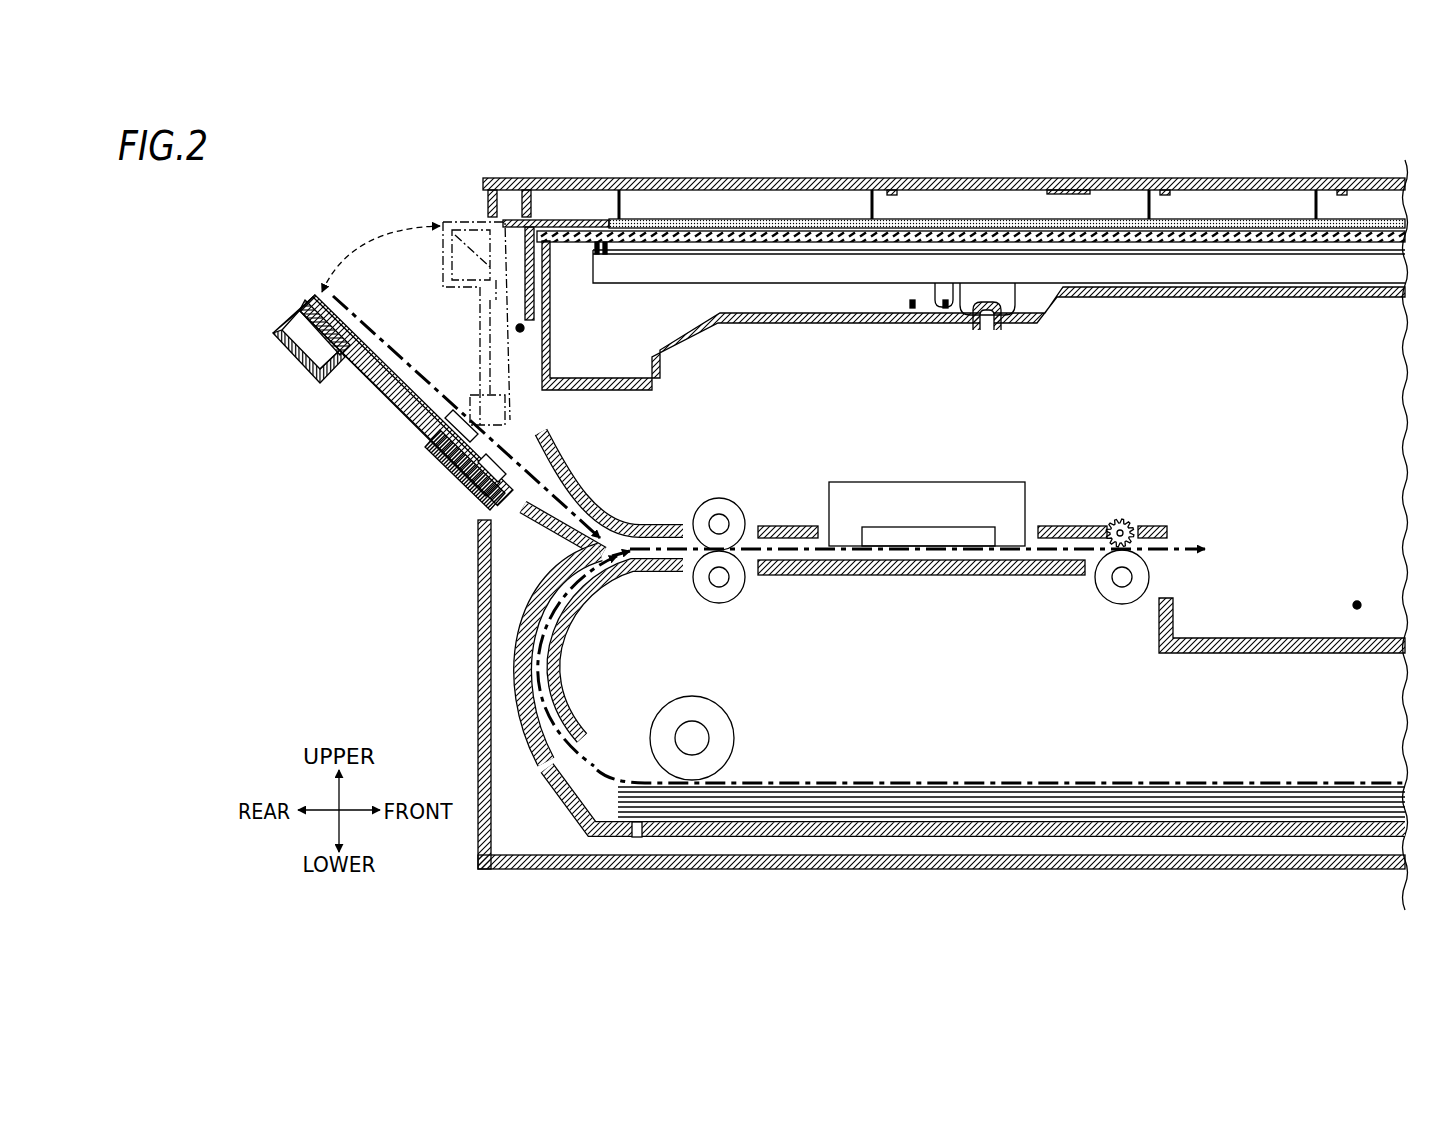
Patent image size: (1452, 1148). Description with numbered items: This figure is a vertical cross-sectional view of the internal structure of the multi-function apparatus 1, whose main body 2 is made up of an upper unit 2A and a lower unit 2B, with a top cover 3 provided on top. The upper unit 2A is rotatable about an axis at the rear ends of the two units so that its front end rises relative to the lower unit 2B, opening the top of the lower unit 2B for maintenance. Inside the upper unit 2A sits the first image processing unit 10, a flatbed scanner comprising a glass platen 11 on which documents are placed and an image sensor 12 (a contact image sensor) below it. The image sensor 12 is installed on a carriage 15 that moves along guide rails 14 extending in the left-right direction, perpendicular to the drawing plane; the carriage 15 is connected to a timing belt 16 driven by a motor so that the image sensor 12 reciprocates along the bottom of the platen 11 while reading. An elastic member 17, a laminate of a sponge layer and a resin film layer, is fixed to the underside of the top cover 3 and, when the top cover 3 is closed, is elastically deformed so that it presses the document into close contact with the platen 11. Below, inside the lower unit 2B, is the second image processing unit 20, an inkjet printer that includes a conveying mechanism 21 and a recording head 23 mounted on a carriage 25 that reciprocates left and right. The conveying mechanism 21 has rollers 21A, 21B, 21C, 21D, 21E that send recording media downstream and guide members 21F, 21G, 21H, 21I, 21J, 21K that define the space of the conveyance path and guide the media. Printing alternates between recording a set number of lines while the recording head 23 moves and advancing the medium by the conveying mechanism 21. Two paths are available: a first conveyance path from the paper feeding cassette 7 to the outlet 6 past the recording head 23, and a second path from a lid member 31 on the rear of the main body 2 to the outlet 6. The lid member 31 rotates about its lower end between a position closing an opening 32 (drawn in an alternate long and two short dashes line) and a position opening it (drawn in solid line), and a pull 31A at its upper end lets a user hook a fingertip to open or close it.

The multi-function apparatus 1 is at (451, 193).
The main body 2 is at (727, 871).
The upper unit 2A is at (659, 370).
The lower unit 2B is at (480, 628).
The top cover 3 is at (836, 178).
The outlet 6 is at (1357, 605).
The paper feeding cassette 7 is at (566, 790).
The first image processing unit 10 is at (1222, 320).
The platen 11 is at (641, 255).
The image sensor 12 is at (681, 246).
The guide rails 14 is at (1000, 330).
The carriage 15 is at (703, 266).
The timing belt 16 is at (944, 312).
The elastic member 17 is at (747, 219).
The second image processing unit 20 is at (1097, 478).
The conveying mechanism 21 is at (848, 662).
The roller 21A is at (728, 718).
The roller 21B is at (734, 503).
The roller 21C is at (734, 598).
The roller 21D is at (1128, 520).
The roller 21E is at (1110, 592).
The guide member 21F is at (536, 742).
The guide member 21G is at (592, 604).
The guide member 21H is at (608, 497).
The guide member 21I is at (797, 574).
The guide member 21J is at (803, 525).
The guide member 21K is at (1059, 525).
The recording head 23 is at (893, 528).
The carriage 25 is at (955, 490).
The lid member 31 is at (483, 353).
The pull 31A is at (445, 222).
The opening 32 is at (516, 328).